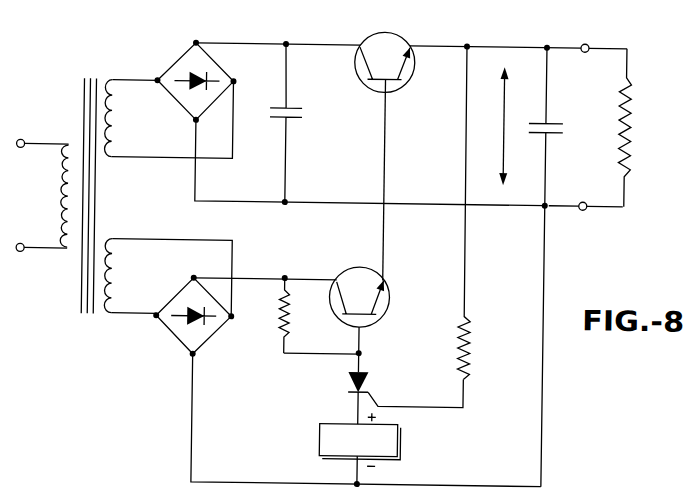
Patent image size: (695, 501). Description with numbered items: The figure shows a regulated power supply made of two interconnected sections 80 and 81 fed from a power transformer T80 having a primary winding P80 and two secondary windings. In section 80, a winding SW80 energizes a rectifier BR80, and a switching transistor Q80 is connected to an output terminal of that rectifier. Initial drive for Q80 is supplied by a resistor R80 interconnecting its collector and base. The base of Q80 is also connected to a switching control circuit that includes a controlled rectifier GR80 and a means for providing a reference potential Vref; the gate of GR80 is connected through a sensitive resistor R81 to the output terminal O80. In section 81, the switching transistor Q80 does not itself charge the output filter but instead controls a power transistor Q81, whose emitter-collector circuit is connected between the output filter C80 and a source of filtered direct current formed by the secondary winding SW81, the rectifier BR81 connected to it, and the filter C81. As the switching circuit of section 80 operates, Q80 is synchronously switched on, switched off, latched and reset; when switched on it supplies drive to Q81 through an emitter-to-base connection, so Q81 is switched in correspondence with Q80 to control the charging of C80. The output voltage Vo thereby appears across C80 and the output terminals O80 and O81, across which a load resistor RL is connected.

The power transformer T80 is at (84, 185).
The primary winding P80 is at (42, 195).
The secondary winding SW81 is at (113, 130).
The winding SW80 is at (116, 285).
The rectifier BR81 is at (206, 81).
The rectifier BR80 is at (200, 324).
The filter C81 is at (297, 123).
The output filter C80 is at (555, 117).
The power transistor Q81 is at (394, 55).
The switching transistor Q80 is at (373, 297).
The resistor R80 is at (297, 315).
The sensitive resistor R81 is at (479, 214).
The controlled rectifier GR80 is at (335, 387).
The reference potential Vref is at (360, 440).
The load resistor RL is at (637, 128).
The output voltage Vo is at (502, 126).
The output terminal O80 is at (600, 38).
The output terminal O81 is at (596, 225).
The switching section 80 is at (418, 381).
The section 81 is at (432, 159).